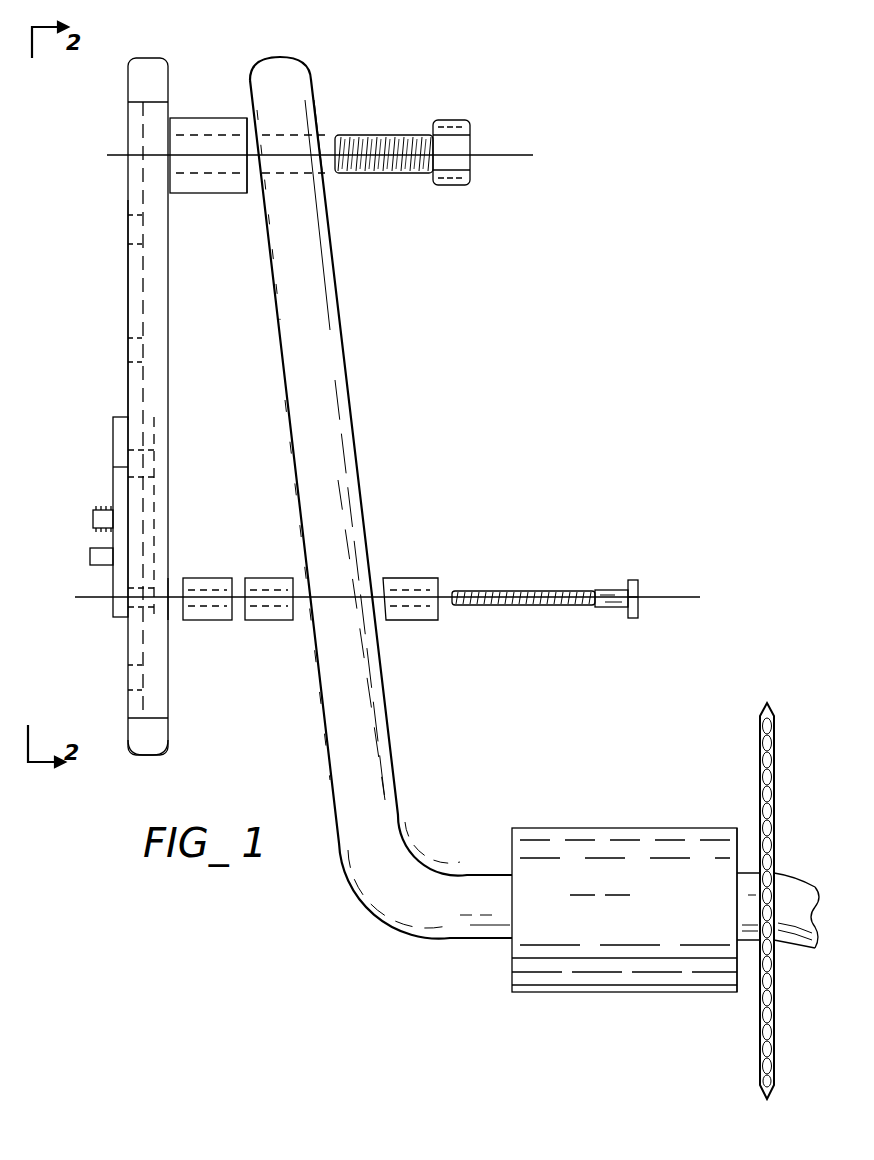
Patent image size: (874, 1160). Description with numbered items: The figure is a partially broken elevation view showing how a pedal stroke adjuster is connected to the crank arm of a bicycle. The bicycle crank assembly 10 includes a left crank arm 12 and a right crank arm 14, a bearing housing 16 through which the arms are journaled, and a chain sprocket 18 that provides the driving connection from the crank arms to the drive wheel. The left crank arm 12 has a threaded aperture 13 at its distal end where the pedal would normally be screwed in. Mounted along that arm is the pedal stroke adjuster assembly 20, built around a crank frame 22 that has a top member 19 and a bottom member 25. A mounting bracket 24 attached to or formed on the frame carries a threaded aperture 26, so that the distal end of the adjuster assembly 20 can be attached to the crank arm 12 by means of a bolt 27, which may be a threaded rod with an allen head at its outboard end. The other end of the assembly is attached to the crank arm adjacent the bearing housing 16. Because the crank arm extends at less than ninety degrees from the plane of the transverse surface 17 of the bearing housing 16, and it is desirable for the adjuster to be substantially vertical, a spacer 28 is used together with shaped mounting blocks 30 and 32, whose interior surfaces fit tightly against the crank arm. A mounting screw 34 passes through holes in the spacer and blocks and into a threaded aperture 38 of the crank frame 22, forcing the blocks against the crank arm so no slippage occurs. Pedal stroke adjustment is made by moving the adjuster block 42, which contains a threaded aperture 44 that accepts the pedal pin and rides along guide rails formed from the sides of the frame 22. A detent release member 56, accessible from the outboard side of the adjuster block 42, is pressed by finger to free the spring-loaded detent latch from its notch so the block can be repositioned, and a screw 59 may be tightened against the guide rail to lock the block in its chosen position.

The crank assembly 10 is at (482, 746).
The left crank arm 12 is at (346, 378).
The threaded aperture 13 is at (322, 138).
The right crank arm 14 is at (780, 943).
The bearing housing 16 is at (713, 845).
The transverse surface 17 is at (565, 828).
The chain sprocket 18 is at (760, 738).
The top member 19 is at (139, 58).
The pedal stroke adjuster assembly 20 is at (90, 225).
The crank frame 22 is at (128, 303).
The mounting bracket 24 is at (191, 118).
The bottom member 25 is at (160, 755).
The threaded aperture 26 is at (247, 150).
The bolt 27 is at (470, 150).
The spacer 28 is at (212, 620).
The shaped mounting block 30 is at (258, 620).
The shaped mounting block 32 is at (415, 578).
The mounting screw 34 is at (640, 585).
The threaded aperture 38 is at (170, 600).
The adjuster block 42 is at (113, 425).
The threaded aperture 44 is at (113, 467).
The detent release member 56 is at (90, 557).
The screw 59 is at (93, 519).